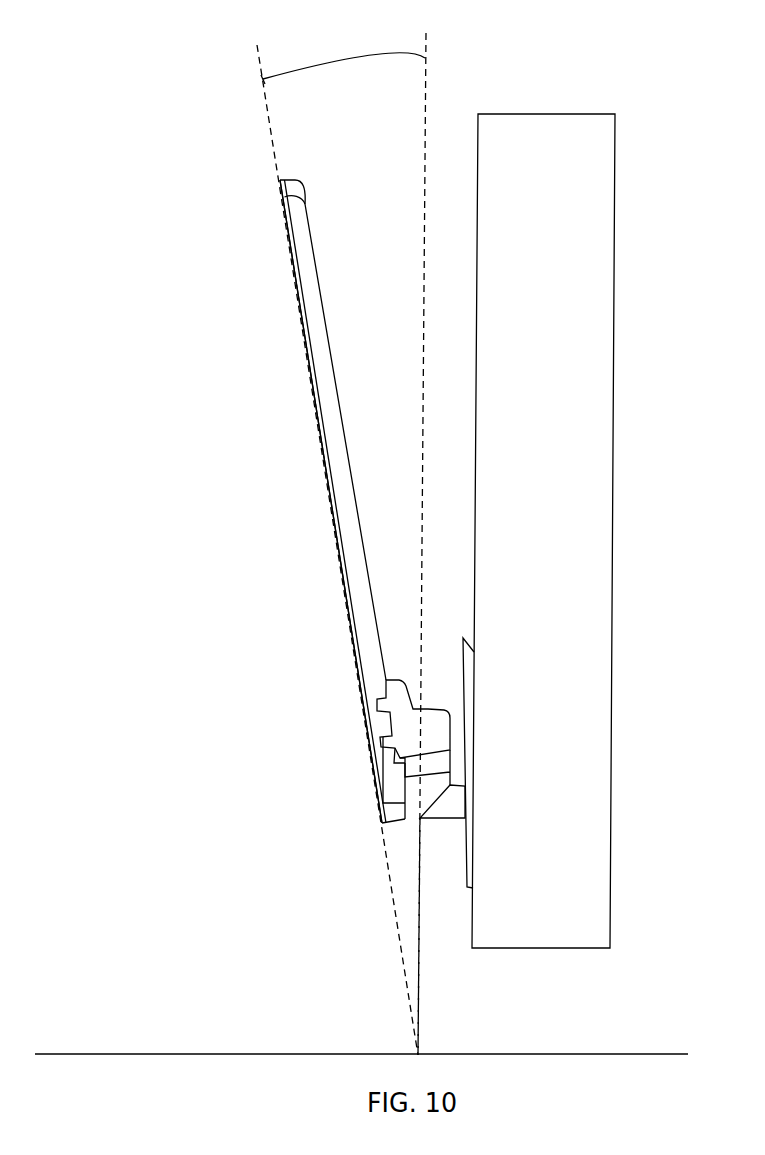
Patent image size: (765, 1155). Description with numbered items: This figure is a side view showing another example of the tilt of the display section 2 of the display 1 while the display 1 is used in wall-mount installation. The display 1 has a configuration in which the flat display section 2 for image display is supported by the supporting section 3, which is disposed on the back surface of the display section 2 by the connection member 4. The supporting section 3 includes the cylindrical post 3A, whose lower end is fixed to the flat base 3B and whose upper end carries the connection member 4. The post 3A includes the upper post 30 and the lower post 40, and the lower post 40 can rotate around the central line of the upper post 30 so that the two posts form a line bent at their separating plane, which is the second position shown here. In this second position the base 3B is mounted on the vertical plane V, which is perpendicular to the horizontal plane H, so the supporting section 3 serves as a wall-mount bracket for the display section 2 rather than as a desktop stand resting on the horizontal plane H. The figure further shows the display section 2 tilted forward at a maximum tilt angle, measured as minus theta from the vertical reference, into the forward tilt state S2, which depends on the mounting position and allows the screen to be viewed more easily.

The display 1 is at (332, 606).
The display section 2 is at (323, 387).
The supporting section 3 is at (495, 999).
The post 3A is at (438, 829).
The base 3B is at (469, 888).
The connection member 4 is at (428, 708).
The upper post 30 is at (410, 790).
The lower post 40 is at (458, 802).
The forward tilt state S2 is at (285, 299).
The vertical plane V is at (478, 134).
The horizontal plane H is at (371, 1055).